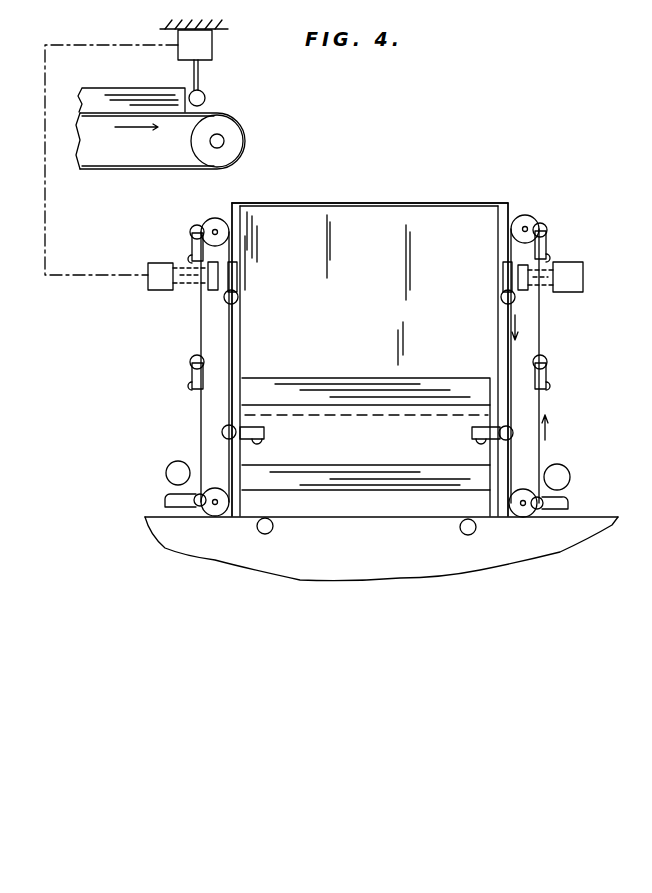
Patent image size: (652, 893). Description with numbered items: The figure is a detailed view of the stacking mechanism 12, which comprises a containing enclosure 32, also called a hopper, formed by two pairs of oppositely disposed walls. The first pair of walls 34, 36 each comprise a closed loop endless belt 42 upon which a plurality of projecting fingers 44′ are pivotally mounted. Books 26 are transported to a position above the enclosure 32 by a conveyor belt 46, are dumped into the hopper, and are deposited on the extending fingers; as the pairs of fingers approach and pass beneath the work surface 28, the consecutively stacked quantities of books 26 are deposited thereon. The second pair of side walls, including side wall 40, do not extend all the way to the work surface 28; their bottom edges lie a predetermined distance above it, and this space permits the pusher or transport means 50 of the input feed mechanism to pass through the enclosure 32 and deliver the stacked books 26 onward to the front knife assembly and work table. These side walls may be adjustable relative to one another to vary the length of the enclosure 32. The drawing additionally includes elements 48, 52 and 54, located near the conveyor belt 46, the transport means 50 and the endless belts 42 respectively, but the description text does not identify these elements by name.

The stacking mechanism 12 is at (522, 156).
The books 26 is at (150, 78).
The work surface 28 is at (590, 517).
The containing enclosure 32 is at (338, 203).
The wall 34 is at (243, 340).
The wall 36 is at (497, 325).
The side wall 40 is at (377, 290).
The closed loop endless belt 42 is at (199, 330).
The projecting fingers 44′ is at (237, 280).
The conveyor belt 46 is at (120, 170).
The sensor 48 is at (212, 48).
The pusher or transport means 50 is at (165, 263).
The cap 52 is at (212, 290).
The roller 54 is at (178, 461).